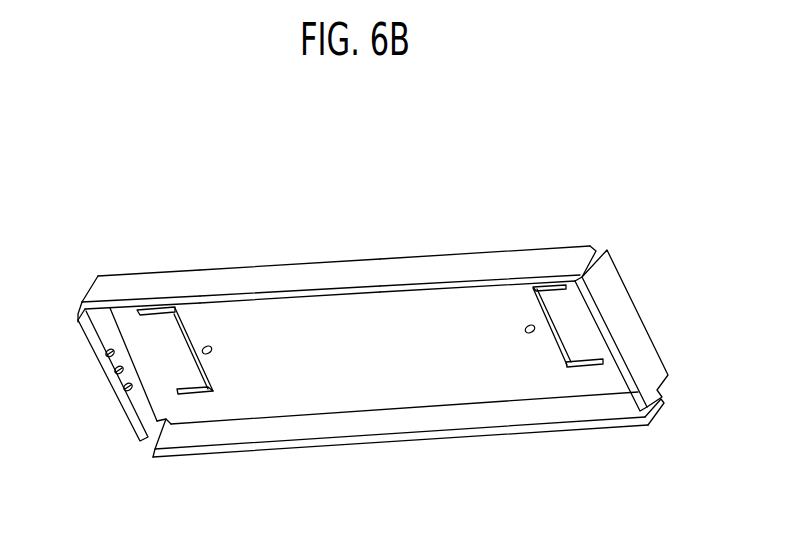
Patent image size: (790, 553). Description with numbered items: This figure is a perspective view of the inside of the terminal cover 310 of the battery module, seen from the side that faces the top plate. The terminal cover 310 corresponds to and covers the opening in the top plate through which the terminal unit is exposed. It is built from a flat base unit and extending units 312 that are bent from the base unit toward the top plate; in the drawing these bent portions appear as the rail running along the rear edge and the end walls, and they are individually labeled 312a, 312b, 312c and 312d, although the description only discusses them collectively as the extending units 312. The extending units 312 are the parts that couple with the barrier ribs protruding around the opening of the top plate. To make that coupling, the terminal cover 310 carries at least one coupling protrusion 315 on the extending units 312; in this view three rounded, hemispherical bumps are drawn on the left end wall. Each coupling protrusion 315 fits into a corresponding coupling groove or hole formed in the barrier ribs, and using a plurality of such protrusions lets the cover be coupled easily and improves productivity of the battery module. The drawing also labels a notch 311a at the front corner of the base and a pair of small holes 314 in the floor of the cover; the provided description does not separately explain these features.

The terminal cover 310 is at (172, 247).
The extending units 312 is at (453, 172).
The rail left end portion 312a is at (88, 357).
The rail middle portion 312b is at (332, 277).
The rail right portion 312c is at (605, 288).
The rail end plate 312d is at (607, 426).
The coupling protrusion 315 is at (108, 385).
The floor notch 311a is at (155, 415).
The holes 314 is at (208, 355).